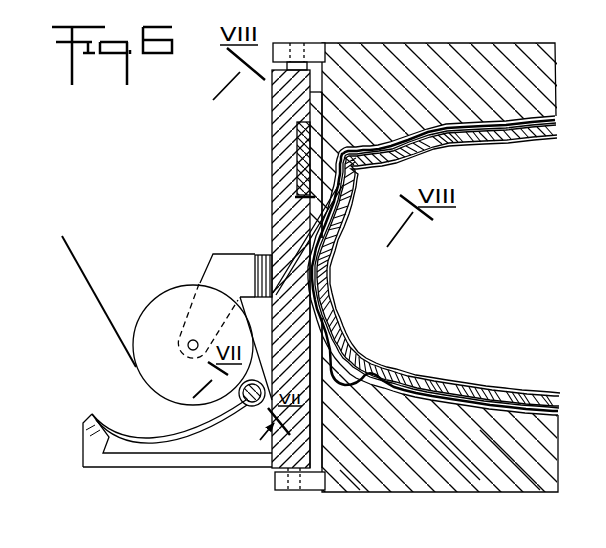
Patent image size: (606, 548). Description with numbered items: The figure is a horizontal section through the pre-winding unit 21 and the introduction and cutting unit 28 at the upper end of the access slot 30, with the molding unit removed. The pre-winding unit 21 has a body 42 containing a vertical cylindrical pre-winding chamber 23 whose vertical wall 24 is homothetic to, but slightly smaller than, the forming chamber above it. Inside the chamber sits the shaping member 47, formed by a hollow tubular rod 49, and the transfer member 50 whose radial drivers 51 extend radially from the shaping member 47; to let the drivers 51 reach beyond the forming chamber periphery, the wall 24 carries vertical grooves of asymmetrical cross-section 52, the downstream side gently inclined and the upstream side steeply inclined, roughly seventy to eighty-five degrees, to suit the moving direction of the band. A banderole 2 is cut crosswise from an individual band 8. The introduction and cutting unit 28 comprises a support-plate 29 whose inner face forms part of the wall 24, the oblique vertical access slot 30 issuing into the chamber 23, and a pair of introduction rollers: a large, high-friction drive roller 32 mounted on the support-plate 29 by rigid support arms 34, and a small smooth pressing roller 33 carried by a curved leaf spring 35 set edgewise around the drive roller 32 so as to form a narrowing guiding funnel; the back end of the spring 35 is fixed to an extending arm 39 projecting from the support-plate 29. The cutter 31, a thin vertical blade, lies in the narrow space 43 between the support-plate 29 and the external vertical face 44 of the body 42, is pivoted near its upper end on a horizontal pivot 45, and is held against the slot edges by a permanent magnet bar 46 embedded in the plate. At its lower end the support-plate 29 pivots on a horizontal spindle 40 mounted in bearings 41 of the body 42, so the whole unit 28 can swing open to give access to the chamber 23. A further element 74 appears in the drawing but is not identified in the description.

The banderole 2 is at (468, 410).
The individual band 8 is at (82, 282).
The pre-winding unit 21 is at (461, 58).
The pre-winding chamber 23 is at (557, 118).
The vertical wall 24 is at (404, 405).
The introduction and transverse cutting unit 28 is at (152, 266).
The support-plate 29 is at (270, 452).
The access slot 30 is at (283, 283).
The cutter 31 is at (297, 145).
The drive roller 32 is at (150, 312).
The pressing roller 33 is at (250, 407).
The rigid support arms 34 is at (215, 270).
The curved leaf spring 35 is at (170, 442).
The extending arm 39 is at (123, 458).
The horizontal spindle 40 is at (290, 45).
The bearings 41 is at (300, 45).
The body 42 is at (454, 267).
The narrow space 43 is at (330, 75).
The external vertical face 44 is at (322, 75).
The horizontal pivot 45 is at (297, 193).
The permanent magnet bar 46 is at (297, 170).
The shaping member 47 is at (512, 150).
The tubular rod 49 is at (468, 142).
The transfer member 50 is at (352, 166).
The radial drivers 51 is at (358, 352).
The vertical grooves of asymmetrical cross-section 52 is at (349, 140).
The band edge 74 is at (342, 283).